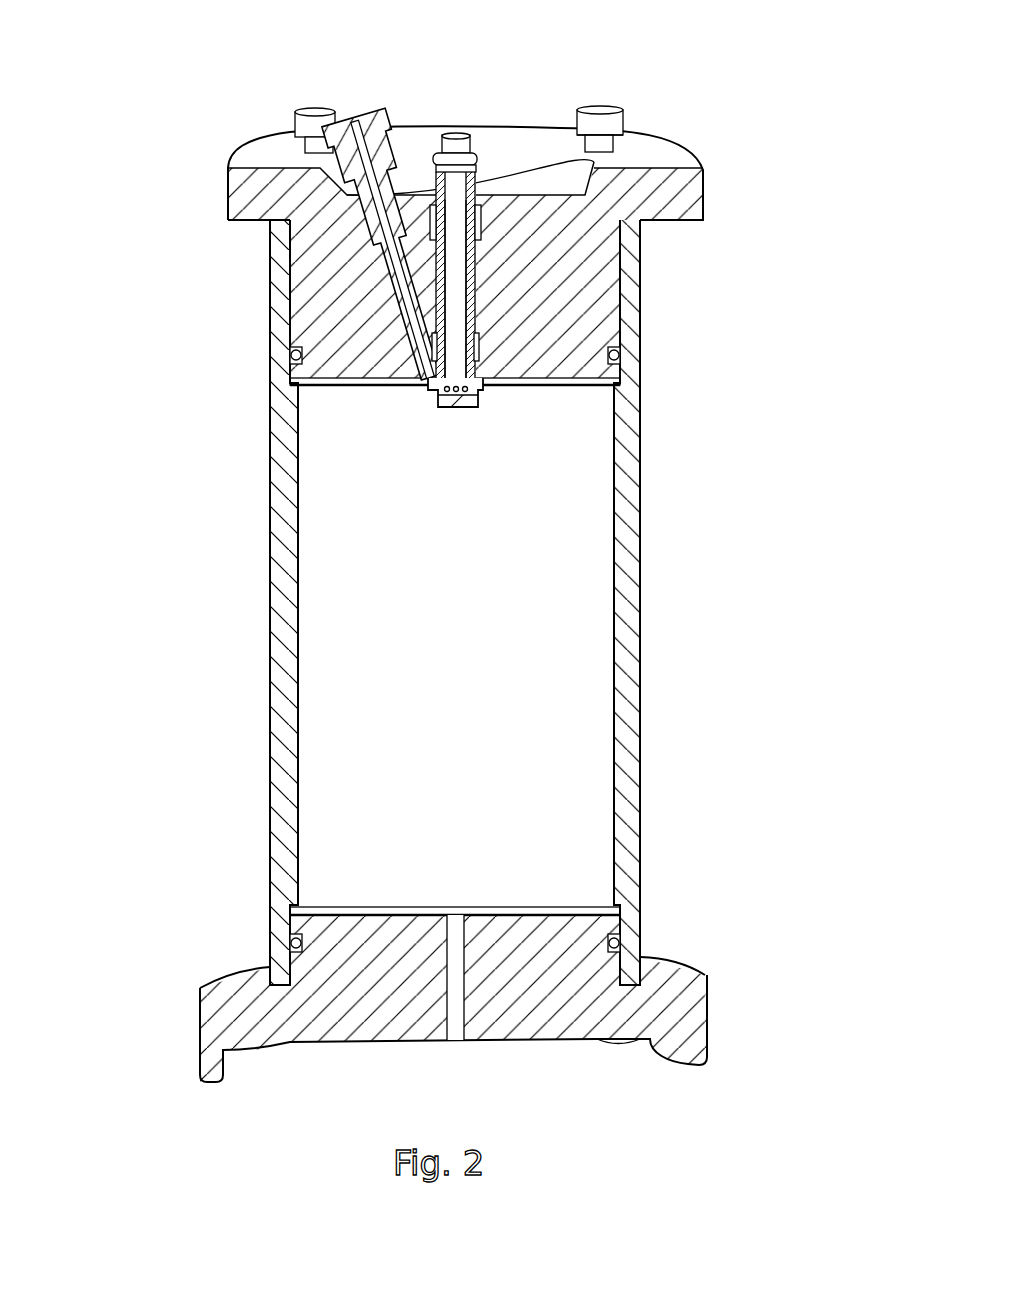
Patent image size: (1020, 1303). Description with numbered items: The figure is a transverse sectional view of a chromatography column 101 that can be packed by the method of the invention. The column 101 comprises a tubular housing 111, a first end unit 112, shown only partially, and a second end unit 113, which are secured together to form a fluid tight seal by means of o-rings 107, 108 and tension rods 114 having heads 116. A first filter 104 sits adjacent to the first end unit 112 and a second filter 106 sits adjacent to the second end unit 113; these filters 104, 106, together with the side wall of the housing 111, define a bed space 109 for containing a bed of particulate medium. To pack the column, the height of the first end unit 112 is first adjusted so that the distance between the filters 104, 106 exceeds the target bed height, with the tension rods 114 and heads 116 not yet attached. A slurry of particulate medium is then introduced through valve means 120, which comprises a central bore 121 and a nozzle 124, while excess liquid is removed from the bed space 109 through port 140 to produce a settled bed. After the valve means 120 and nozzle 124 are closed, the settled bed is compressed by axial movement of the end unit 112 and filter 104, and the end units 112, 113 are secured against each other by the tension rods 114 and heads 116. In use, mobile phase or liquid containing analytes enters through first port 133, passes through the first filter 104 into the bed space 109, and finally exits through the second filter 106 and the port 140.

The column 101 is at (168, 535).
The first filter 104 is at (556, 386).
The second filter 106 is at (617, 904).
The o-ring 107 is at (294, 354).
The o-ring 108 is at (294, 943).
The bed space 109 is at (482, 596).
The tubular housing 111 is at (630, 590).
The first end unit 112 is at (600, 312).
The second end unit 113 is at (677, 990).
The tension rod 114 is at (303, 140).
The head 116 is at (612, 108).
The valve means 120 is at (457, 133).
The central bore 121 is at (468, 188).
The nozzle 124 is at (458, 408).
The first port 133 is at (368, 106).
The port 140 is at (458, 1003).